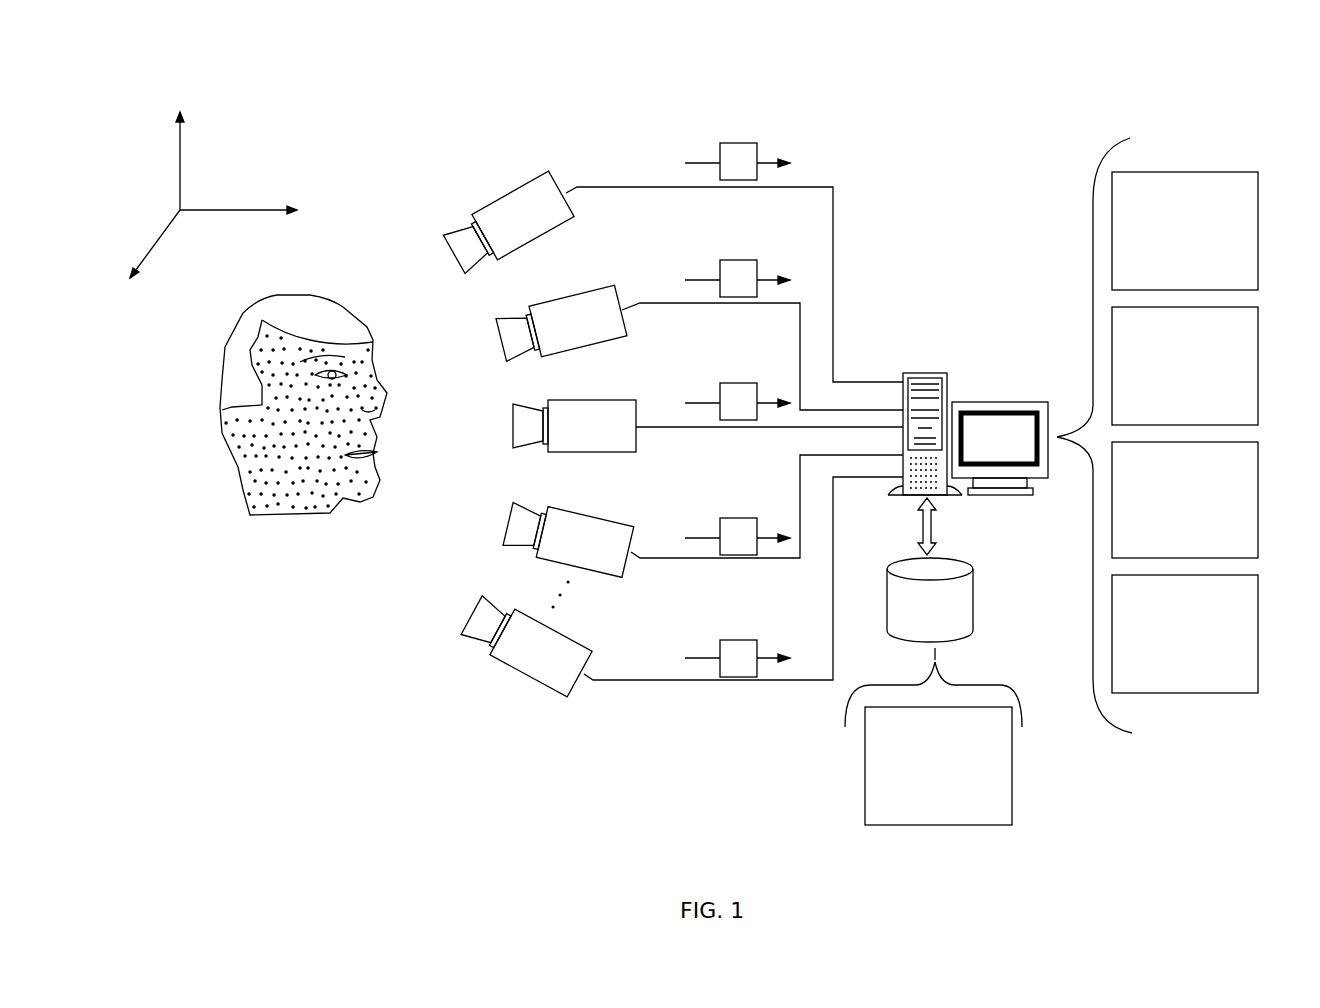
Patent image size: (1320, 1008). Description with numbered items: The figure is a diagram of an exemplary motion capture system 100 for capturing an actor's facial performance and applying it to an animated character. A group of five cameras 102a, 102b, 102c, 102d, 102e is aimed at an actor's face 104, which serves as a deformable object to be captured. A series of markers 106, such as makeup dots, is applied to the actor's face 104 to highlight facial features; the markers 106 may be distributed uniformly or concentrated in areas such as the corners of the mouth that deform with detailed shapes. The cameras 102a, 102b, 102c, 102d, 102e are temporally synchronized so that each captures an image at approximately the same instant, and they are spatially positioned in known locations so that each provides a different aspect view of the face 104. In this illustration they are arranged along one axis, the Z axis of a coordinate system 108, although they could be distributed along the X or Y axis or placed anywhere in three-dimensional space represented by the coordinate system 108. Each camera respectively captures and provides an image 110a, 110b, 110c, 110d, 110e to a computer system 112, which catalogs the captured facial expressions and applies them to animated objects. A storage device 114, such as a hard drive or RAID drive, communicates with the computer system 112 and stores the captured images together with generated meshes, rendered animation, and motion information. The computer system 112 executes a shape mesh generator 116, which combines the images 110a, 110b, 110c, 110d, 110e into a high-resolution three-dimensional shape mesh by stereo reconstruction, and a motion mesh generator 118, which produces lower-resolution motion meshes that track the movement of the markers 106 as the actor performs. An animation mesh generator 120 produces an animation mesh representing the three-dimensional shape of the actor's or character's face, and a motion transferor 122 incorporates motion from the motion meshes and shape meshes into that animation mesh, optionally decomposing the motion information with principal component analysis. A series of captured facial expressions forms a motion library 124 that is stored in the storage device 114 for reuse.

The motion capture system 100 is at (975, 85).
The camera 102a is at (558, 173).
The camera 102b is at (624, 287).
The camera 102c is at (640, 410).
The camera 102d is at (634, 542).
The camera 102e is at (592, 650).
The actor's face 104 is at (243, 493).
The markers 106 is at (370, 488).
The coordinate system 108 is at (180, 182).
The image 110a is at (727, 145).
The image 110b is at (730, 260).
The image 110c is at (726, 384).
The image 110d is at (730, 518).
The image 110e is at (727, 640).
The computer system 112 is at (952, 388).
The storage device 114 is at (975, 600).
The shape mesh generator 116 is at (1262, 197).
The motion mesh generator 118 is at (1262, 355).
The animation mesh generator 120 is at (1260, 477).
The motion transferor 122 is at (1260, 607).
The motion library 124 is at (1012, 798).